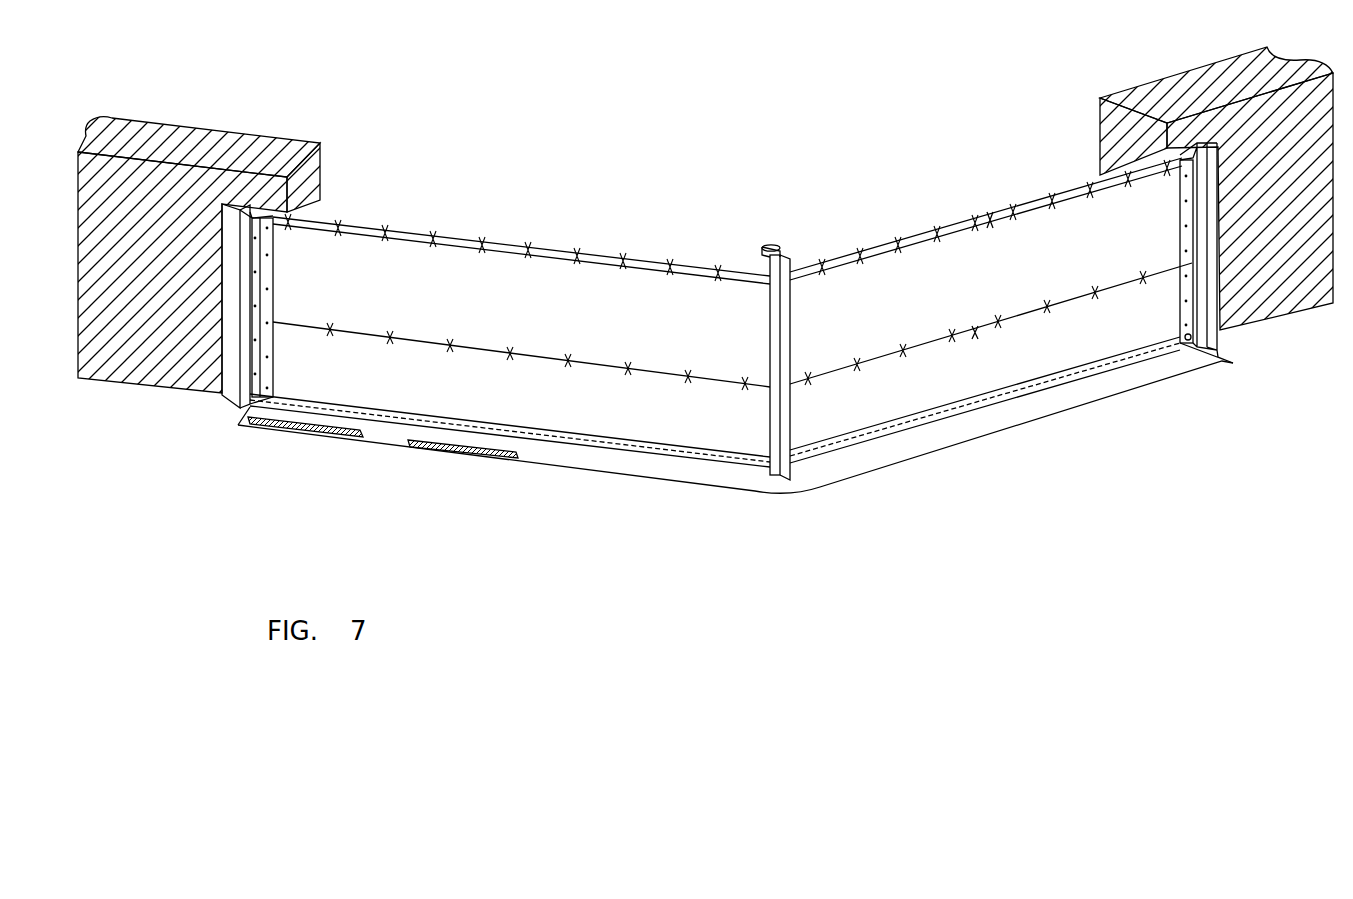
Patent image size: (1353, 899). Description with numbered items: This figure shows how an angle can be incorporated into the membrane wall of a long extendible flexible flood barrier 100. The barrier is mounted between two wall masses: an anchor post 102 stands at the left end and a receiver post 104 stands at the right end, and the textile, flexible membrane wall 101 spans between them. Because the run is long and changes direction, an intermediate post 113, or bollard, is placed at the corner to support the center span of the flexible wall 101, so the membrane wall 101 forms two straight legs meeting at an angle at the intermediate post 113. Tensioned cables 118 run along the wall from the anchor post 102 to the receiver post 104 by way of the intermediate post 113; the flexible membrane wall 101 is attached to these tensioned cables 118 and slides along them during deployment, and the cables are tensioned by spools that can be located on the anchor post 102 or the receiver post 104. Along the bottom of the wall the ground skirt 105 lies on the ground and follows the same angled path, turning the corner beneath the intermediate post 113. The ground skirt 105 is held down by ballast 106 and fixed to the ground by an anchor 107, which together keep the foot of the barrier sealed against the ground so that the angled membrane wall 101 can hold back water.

The extendible flexible flood barrier 100 is at (527, 173).
The flexible membrane wall 101 is at (697, 298).
The anchor post 102 is at (270, 273).
The receiver post 104 is at (1182, 225).
The ground skirt 105 is at (597, 473).
The ballast 106 is at (457, 450).
The anchor 107 is at (327, 428).
The intermediate post 113 is at (768, 237).
The tensioned cables 118 is at (1022, 390).